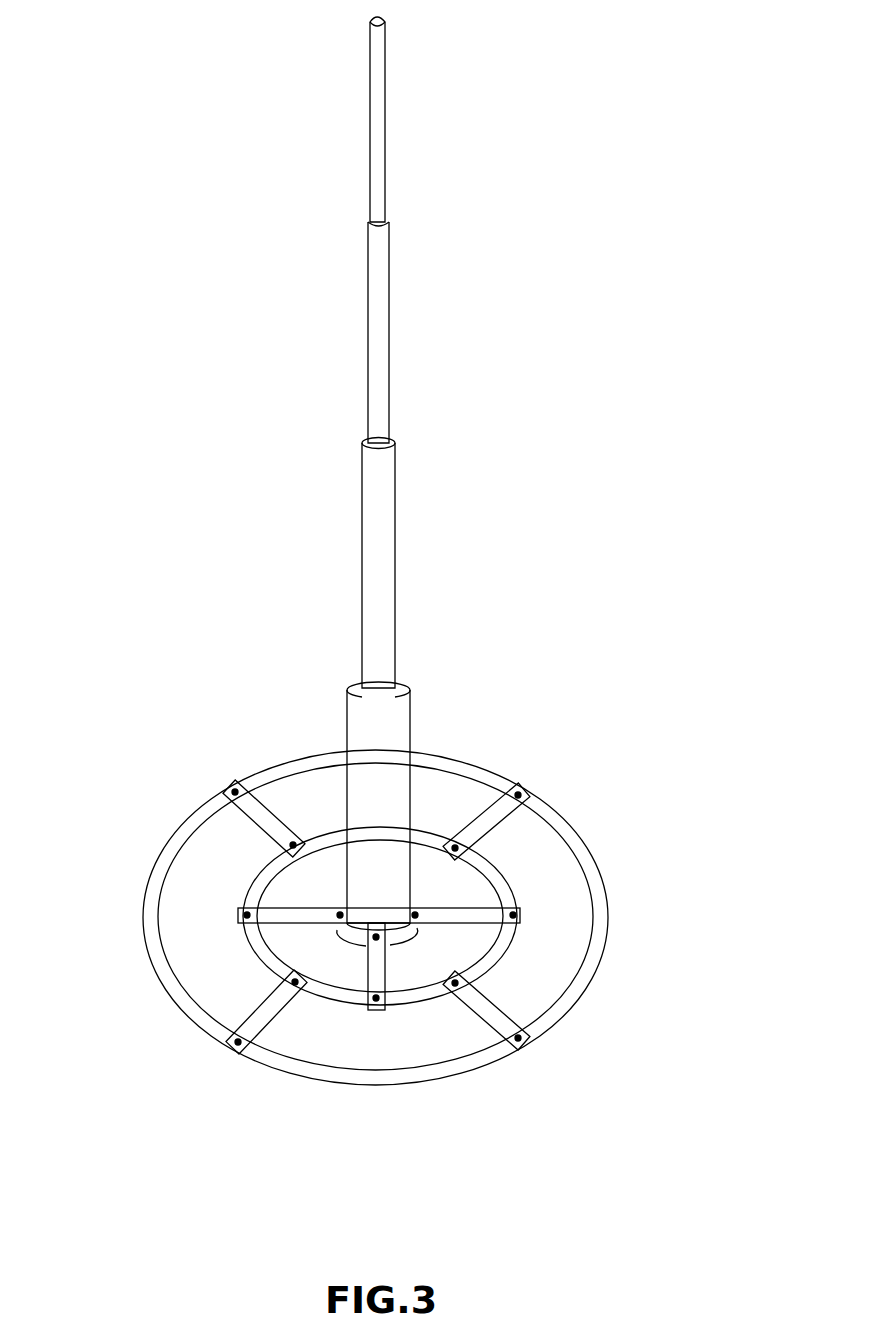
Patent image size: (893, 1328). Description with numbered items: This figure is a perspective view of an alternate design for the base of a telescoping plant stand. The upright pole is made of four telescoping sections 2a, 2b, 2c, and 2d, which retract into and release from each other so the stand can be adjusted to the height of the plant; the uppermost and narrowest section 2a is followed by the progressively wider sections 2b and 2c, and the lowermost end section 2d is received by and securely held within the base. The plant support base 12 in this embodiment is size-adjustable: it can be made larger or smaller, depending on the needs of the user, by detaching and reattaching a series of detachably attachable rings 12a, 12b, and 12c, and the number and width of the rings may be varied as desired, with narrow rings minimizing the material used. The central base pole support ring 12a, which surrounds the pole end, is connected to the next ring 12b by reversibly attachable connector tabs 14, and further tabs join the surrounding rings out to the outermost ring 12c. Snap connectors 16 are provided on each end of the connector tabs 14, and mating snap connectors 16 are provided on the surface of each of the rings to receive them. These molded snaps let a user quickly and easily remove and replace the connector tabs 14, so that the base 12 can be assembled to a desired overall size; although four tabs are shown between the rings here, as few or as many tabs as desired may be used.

The telescoping pole section 2a is at (386, 88).
The telescoping pole section 2b is at (389, 325).
The telescoping pole section 2c is at (396, 543).
The telescoping pole end section 2d is at (411, 714).
The plant support base 12 is at (235, 788).
The central base pole support ring 12a is at (414, 907).
The ring 12b is at (520, 898).
The ring 12c is at (590, 986).
The connector tab 14 is at (252, 1010).
The snap connector 16 is at (340, 910).